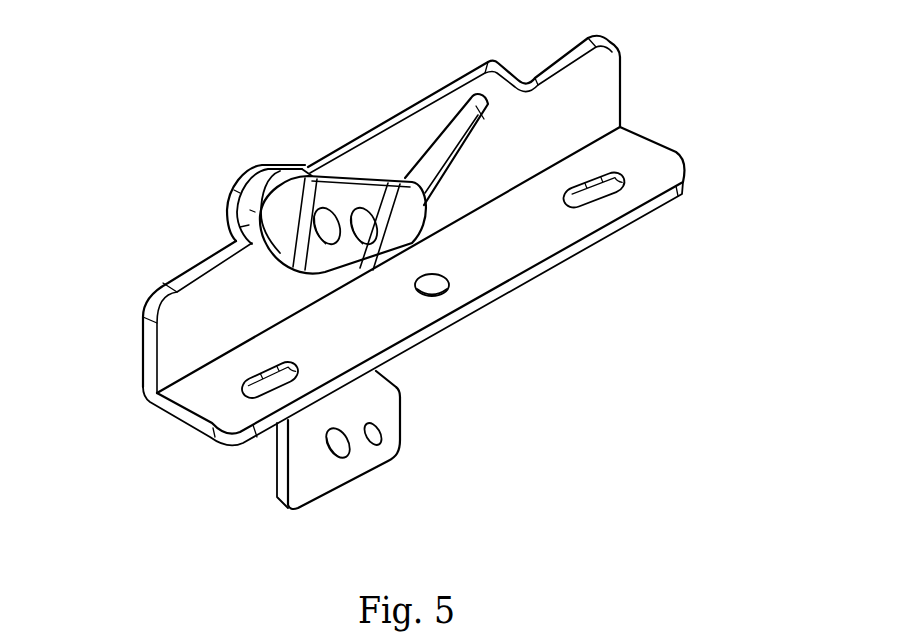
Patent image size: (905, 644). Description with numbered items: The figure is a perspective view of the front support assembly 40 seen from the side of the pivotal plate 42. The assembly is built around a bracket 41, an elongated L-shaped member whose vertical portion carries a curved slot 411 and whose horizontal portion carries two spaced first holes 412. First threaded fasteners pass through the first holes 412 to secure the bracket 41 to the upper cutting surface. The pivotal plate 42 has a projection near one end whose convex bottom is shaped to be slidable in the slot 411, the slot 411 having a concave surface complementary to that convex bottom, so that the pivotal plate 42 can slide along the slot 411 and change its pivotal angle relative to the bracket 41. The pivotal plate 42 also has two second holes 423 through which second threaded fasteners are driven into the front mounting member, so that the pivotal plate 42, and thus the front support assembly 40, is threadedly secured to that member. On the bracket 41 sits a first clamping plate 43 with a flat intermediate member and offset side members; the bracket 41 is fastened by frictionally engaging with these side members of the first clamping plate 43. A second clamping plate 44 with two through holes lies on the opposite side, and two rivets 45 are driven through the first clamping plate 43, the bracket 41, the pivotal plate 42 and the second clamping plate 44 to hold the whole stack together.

The front support assembly 40 is at (263, 120).
The bracket 41 is at (517, 238).
The curved slot 411 is at (437, 160).
The first holes 412 is at (597, 197).
The pivotal plate 42 is at (303, 473).
The second holes 423 is at (343, 447).
The first clamping plate 43 is at (347, 200).
The second clamping plate 44 is at (247, 195).
The rivets 45 is at (357, 233).